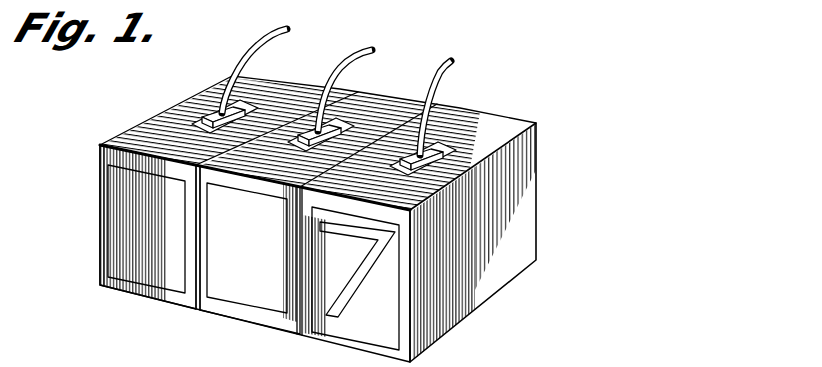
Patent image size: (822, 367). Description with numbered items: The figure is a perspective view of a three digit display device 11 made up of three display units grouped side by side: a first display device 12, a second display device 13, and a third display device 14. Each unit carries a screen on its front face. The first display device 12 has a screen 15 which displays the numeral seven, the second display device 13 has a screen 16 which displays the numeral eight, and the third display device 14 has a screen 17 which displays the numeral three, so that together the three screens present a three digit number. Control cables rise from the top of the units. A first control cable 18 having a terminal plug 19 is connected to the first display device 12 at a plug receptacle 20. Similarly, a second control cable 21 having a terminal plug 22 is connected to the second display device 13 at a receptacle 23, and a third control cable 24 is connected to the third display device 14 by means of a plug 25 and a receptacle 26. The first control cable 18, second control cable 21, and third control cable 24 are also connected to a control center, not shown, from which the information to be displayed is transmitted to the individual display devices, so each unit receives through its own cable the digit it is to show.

The three digit display device 11 is at (96, 137).
The first display device 12 is at (535, 122).
The second display device 13 is at (350, 121).
The third display device 14 is at (297, 82).
The screen 15 is at (352, 318).
The screen 16 is at (258, 297).
The screen 17 is at (162, 274).
The first control cable 18 is at (456, 83).
The terminal plug 19 is at (442, 132).
The plug receptacle 20 is at (483, 122).
The second control cable 21 is at (374, 52).
The terminal plug 22 is at (341, 102).
The receptacle 23 is at (360, 128).
The third control cable 24 is at (262, 42).
The plug 25 is at (228, 90).
The receptacle 26 is at (252, 124).